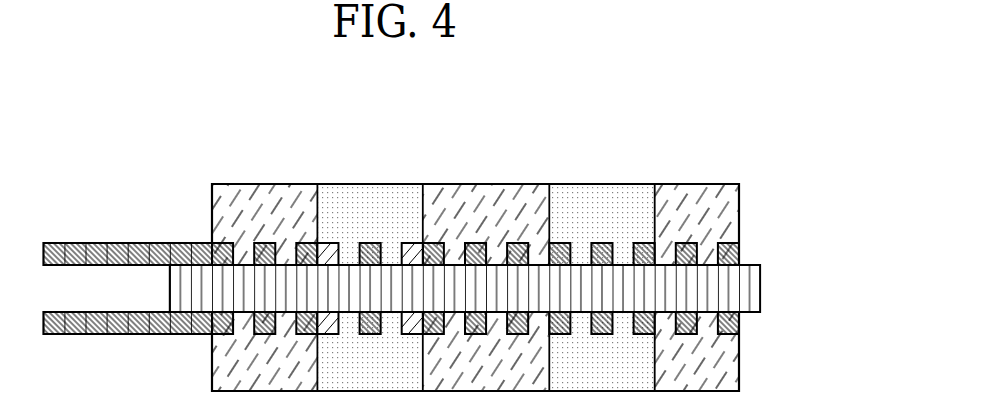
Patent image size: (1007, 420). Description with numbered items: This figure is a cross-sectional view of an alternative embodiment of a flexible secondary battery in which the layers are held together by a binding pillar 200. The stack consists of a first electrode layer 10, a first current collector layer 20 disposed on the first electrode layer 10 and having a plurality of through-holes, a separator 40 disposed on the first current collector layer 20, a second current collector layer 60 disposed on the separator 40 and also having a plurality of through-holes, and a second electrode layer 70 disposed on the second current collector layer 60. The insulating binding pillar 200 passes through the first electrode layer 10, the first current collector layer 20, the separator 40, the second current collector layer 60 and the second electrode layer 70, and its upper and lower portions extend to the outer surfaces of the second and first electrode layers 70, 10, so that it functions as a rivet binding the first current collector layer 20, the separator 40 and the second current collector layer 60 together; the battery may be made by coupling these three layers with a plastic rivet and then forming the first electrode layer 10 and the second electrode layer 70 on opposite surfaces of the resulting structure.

The first electrode layer 10 is at (739, 357).
The first current collector layer 20 is at (739, 323).
The separator 40 is at (760, 290).
The second current collector layer 60 is at (739, 250).
The second electrode layer 70 is at (739, 218).
The binding pillar 200 is at (604, 207).